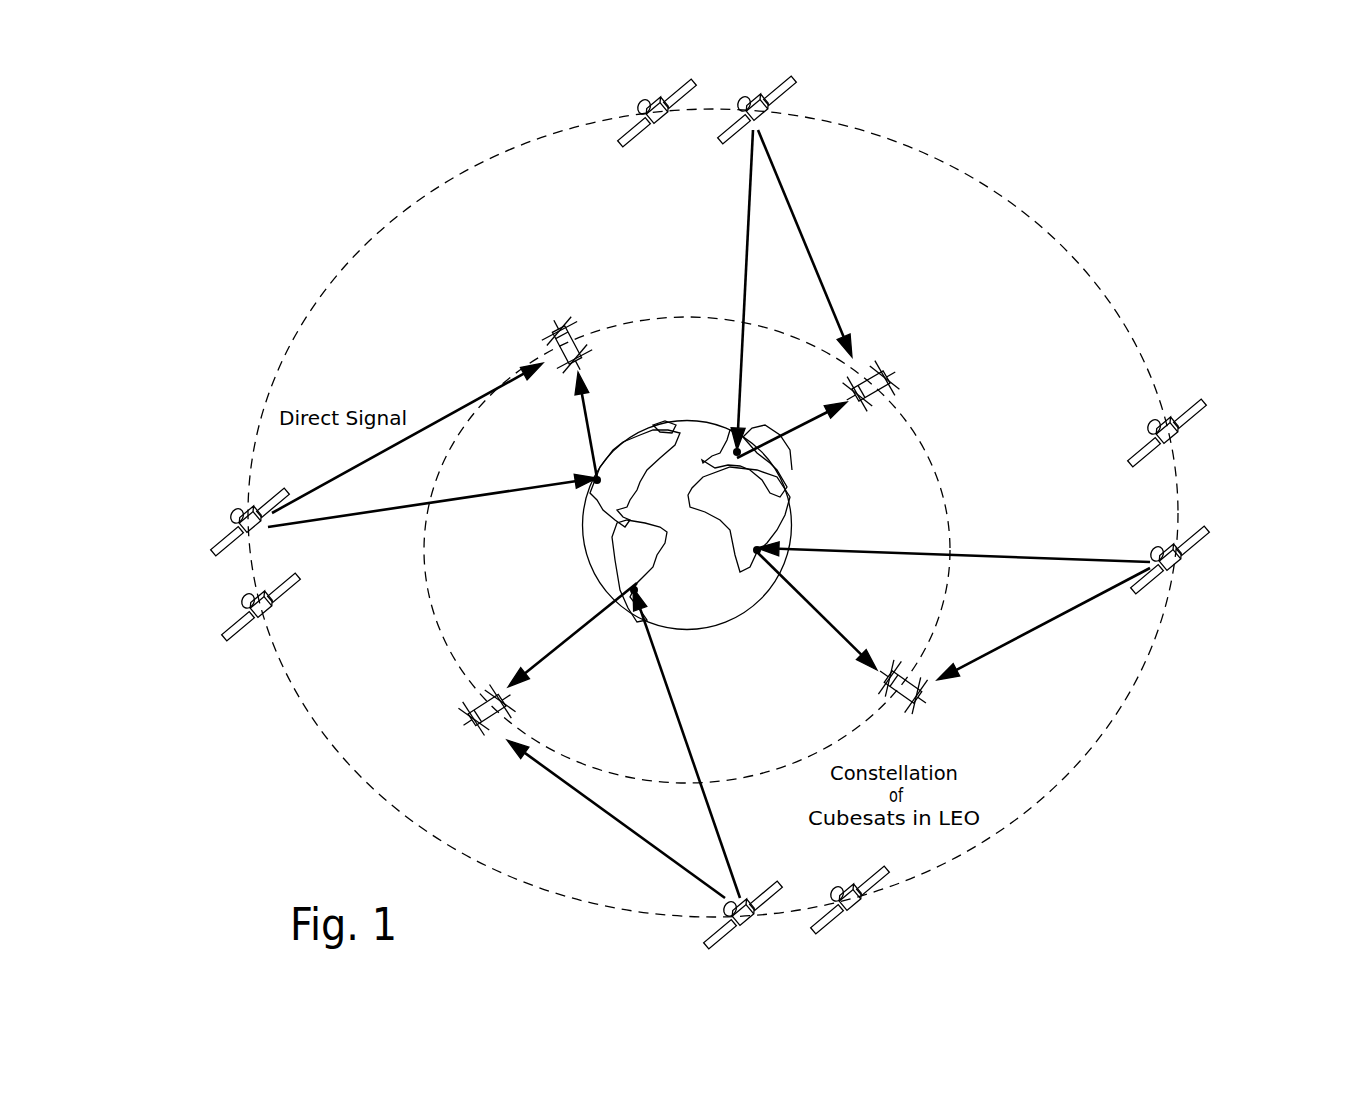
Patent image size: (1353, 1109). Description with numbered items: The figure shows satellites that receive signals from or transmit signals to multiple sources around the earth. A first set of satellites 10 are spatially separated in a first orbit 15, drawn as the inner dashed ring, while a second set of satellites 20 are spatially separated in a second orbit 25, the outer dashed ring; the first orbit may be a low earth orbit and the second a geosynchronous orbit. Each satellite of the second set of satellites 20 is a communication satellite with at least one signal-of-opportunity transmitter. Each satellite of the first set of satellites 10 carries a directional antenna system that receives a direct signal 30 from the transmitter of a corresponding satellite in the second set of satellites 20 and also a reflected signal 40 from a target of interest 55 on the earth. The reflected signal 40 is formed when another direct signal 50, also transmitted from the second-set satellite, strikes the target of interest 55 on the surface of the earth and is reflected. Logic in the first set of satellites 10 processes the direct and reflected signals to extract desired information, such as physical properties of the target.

The first set of satellites 10 is at (710, 497).
The first orbit 15 is at (686, 319).
The second set of satellites 20 is at (704, 524).
The second orbit 25 is at (422, 200).
The direct signal 30 is at (711, 514).
The reflected signal 40 is at (694, 534).
The direct signal 50 is at (709, 514).
The target of interest 55 is at (666, 513).